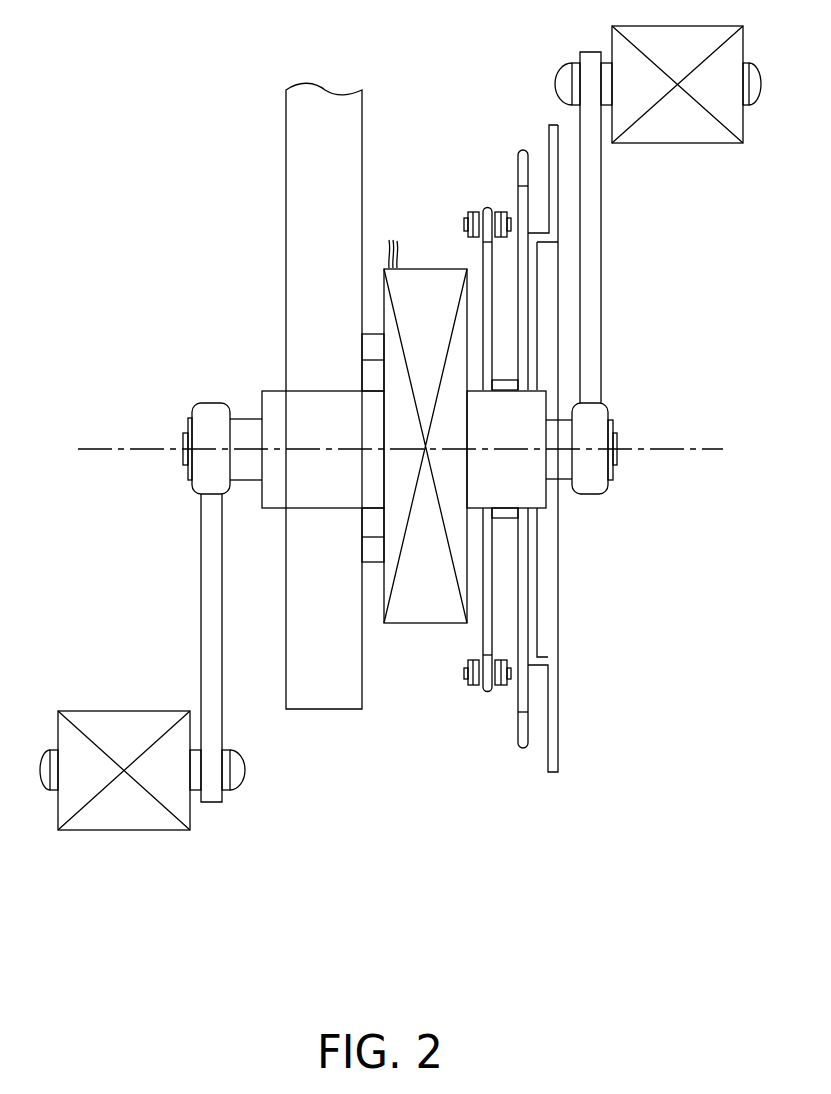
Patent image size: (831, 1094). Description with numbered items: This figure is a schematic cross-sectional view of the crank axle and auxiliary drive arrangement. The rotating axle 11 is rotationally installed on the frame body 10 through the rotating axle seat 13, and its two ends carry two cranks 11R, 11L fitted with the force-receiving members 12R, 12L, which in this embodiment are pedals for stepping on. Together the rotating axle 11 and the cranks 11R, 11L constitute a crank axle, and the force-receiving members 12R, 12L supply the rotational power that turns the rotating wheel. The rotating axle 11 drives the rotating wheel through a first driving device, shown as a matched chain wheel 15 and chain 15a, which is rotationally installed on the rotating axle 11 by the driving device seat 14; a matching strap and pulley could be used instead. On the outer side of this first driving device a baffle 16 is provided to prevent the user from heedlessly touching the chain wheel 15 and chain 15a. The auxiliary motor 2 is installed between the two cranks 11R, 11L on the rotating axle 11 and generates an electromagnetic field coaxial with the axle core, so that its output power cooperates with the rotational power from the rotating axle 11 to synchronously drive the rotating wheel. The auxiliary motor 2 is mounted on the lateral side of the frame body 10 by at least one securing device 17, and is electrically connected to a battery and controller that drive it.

The auxiliary motor 2 is at (425, 278).
The frame body 10 is at (293, 146).
The rotating axle 11 is at (245, 432).
The crank 11L is at (207, 594).
The crank 11R is at (590, 266).
The force-receiving member 12L is at (115, 720).
The force-receiving member 12R is at (681, 135).
The rotating axle seat 13 is at (274, 404).
The driving device seat 14 is at (527, 493).
The chain wheel 15 is at (485, 642).
The chain 15a is at (470, 688).
The baffle 16 is at (553, 733).
The securing device 17 is at (374, 340).